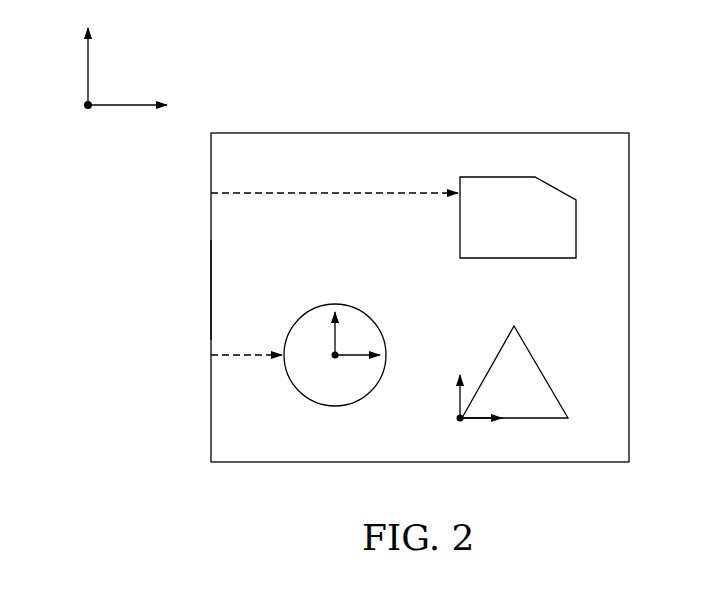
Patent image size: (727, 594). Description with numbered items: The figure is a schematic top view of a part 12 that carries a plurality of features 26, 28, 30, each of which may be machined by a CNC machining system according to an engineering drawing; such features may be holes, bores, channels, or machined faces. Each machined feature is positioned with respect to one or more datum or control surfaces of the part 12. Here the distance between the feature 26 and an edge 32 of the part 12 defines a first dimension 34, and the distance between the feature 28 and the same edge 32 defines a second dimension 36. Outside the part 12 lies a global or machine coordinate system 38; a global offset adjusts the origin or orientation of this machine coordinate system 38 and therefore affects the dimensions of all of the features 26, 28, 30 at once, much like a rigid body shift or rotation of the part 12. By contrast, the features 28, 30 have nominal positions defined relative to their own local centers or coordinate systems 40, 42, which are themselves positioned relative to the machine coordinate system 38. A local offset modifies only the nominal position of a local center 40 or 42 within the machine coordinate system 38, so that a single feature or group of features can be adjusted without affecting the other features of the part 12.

The part 12 is at (420, 133).
The feature 26 is at (493, 177).
The feature 28 is at (335, 406).
The feature 30 is at (537, 364).
The edge 32 is at (211, 298).
The first dimension 34 is at (362, 195).
The second dimension 36 is at (232, 357).
The machine coordinate system 38 is at (88, 110).
The local coordinate system 40 is at (335, 360).
The local coordinate system 42 is at (460, 421).